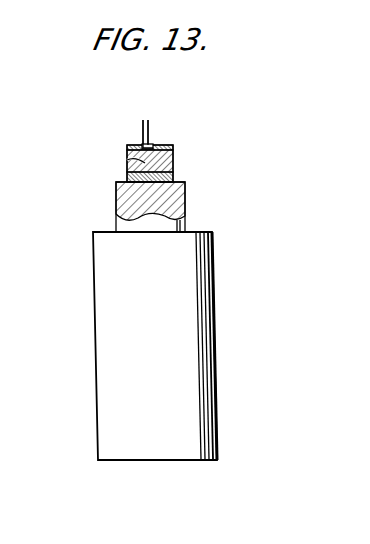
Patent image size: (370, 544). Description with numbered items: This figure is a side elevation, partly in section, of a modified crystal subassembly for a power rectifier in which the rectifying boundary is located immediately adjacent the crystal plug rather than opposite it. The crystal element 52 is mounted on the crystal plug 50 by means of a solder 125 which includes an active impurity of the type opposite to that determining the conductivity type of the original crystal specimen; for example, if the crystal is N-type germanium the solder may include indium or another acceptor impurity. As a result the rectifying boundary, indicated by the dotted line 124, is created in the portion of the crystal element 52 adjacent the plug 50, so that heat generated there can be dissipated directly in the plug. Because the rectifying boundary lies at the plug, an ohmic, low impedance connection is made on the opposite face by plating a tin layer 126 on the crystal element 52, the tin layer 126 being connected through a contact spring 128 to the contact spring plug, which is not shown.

The crystal plug 50 is at (212, 282).
The rectifying boundary 124 is at (126, 165).
The crystal element 52 is at (168, 158).
The tin layer 126 is at (171, 146).
The solder 125 is at (168, 177).
The contact spring 128 is at (148, 125).